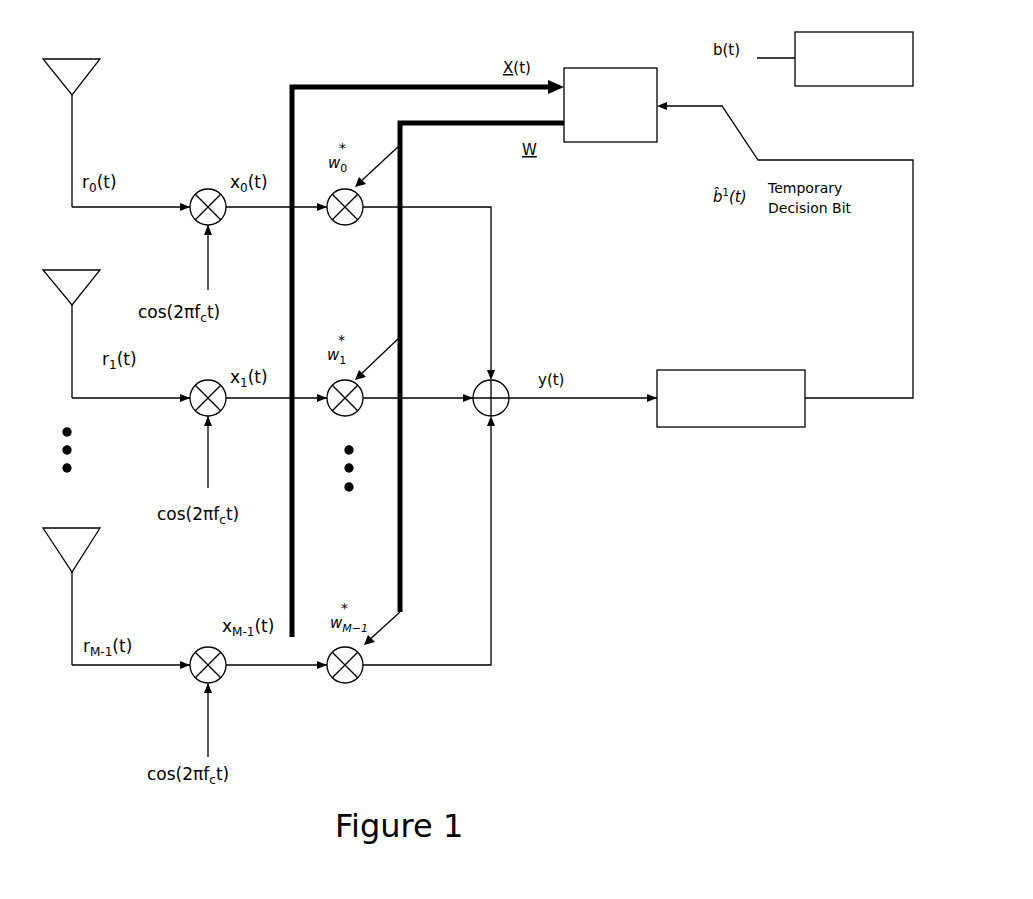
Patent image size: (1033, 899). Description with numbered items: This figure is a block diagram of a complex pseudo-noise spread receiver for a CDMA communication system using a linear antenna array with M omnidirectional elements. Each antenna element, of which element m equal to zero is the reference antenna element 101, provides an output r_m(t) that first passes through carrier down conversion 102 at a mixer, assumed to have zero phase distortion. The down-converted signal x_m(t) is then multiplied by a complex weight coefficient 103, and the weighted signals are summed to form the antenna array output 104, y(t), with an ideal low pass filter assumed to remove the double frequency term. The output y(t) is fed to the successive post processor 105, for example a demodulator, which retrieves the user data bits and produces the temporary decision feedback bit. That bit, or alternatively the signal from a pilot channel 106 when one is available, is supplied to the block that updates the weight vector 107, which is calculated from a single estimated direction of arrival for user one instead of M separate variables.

The reference antenna element 101 is at (71, 348).
The carrier down conversion 102 is at (200, 422).
The complex weight coefficient 103 is at (263, 207).
The antenna array output 104 is at (474, 390).
The post processor 105 is at (731, 385).
The pilot channel 106 is at (854, 45).
The weight vector 107 is at (610, 87).